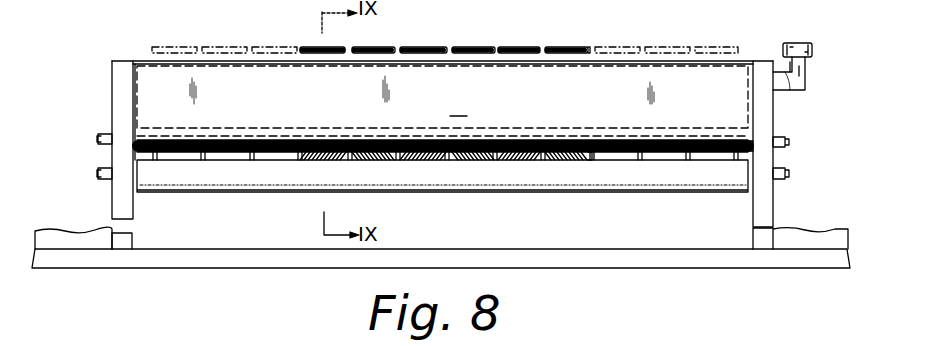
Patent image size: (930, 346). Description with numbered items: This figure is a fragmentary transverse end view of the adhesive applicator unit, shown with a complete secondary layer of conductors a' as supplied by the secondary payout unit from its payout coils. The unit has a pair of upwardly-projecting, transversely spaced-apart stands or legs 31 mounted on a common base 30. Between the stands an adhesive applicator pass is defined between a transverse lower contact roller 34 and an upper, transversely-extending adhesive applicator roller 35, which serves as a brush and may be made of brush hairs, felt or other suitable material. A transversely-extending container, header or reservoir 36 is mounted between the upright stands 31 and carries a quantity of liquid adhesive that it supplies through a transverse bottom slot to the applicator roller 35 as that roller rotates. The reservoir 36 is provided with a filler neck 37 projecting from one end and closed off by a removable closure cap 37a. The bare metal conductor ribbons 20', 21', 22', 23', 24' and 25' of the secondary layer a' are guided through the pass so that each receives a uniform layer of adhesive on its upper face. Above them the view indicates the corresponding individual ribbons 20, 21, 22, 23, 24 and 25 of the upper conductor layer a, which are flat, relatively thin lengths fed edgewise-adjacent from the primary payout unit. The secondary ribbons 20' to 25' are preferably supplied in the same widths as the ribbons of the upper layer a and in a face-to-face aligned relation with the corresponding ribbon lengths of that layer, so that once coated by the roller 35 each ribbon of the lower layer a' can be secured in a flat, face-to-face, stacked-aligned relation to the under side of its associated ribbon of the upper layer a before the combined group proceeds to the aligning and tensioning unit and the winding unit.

The conductor ribbon 20 is at (309, 31).
The conductor ribbon 21 is at (373, 35).
The conductor ribbon 22 is at (423, 31).
The conductor ribbon 23 is at (473, 31).
The conductor ribbon 24 is at (519, 31).
The conductor ribbon 25 is at (566, 31).
The upper conductor layer a is at (600, 30).
The secondary conductor ribbon 20' is at (309, 189).
The secondary conductor ribbon 21' is at (389, 190).
The secondary conductor ribbon 22' is at (436, 191).
The secondary conductor ribbon 23' is at (485, 191).
The secondary conductor ribbon 24' is at (532, 191).
The secondary conductor ribbon 25' is at (578, 191).
The secondary conductor layer a' is at (619, 187).
The base 30 is at (220, 268).
The stand 31 is at (112, 204).
The lower contact roller 34 is at (684, 192).
The adhesive applicator roller 35 is at (748, 149).
The reservoir 36 is at (143, 93).
The filler neck 37 is at (805, 78).
The closure cap 37a is at (812, 28).